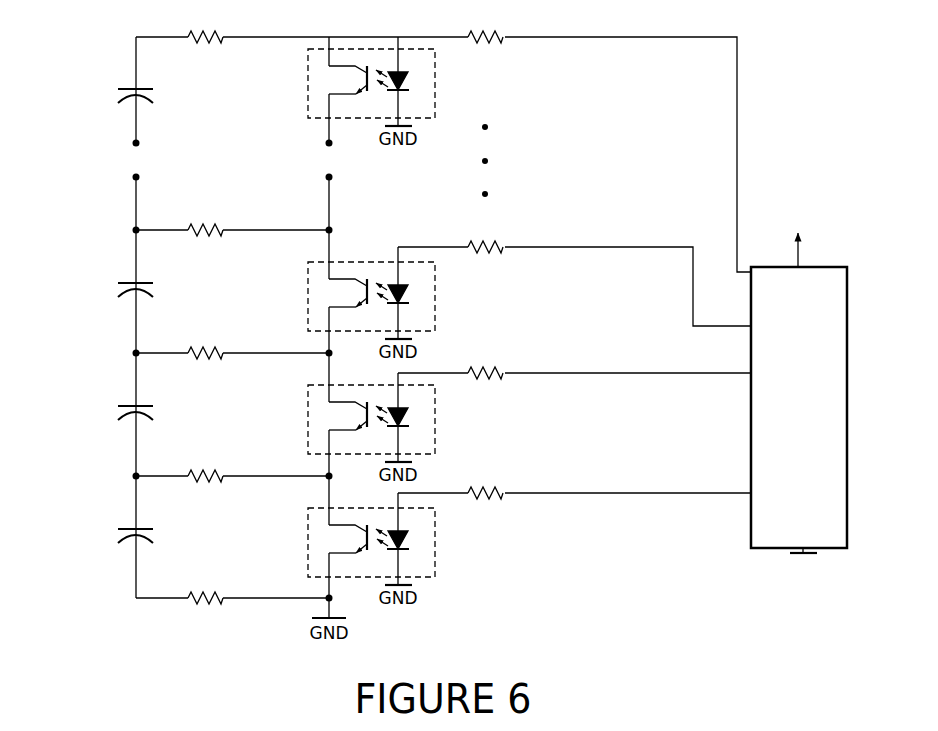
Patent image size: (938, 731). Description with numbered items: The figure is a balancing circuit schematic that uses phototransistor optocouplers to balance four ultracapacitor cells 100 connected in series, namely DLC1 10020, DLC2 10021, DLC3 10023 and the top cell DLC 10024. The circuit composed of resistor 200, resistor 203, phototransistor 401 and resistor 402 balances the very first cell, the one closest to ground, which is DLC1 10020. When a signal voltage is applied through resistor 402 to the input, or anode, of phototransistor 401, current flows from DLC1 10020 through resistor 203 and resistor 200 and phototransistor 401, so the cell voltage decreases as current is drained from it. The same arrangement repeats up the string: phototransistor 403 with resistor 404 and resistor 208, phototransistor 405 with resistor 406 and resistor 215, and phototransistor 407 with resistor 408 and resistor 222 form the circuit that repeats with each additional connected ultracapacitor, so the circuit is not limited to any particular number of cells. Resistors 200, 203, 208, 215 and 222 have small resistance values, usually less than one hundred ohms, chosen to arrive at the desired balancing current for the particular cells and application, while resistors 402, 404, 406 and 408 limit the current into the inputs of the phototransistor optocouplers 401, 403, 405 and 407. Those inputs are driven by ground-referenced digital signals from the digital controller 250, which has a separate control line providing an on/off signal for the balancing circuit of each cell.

The ultracapacitor cell 100 is at (109, 328).
The ultracapacitor cell DLC 10024 is at (104, 108).
The ultracapacitor cell DLC3 10023 is at (109, 302).
The ultracapacitor cell DLC2 10021 is at (109, 425).
The ultracapacitor cell DLC1 10020 is at (109, 548).
The resistor 222 is at (233, 55).
The resistor 215 is at (233, 248).
The resistor 208 is at (233, 371).
The resistor 203 is at (233, 494).
The resistor 200 is at (180, 616).
The resistor 408 is at (511, 55).
The resistor 406 is at (511, 229).
The resistor 404 is at (510, 356).
The resistor 402 is at (510, 476).
The phototransistor 407 is at (407, 99).
The phototransistor 405 is at (407, 312).
The phototransistor 403 is at (407, 435).
The phototransistor 401 is at (407, 558).
The digital controller 250 is at (769, 407).